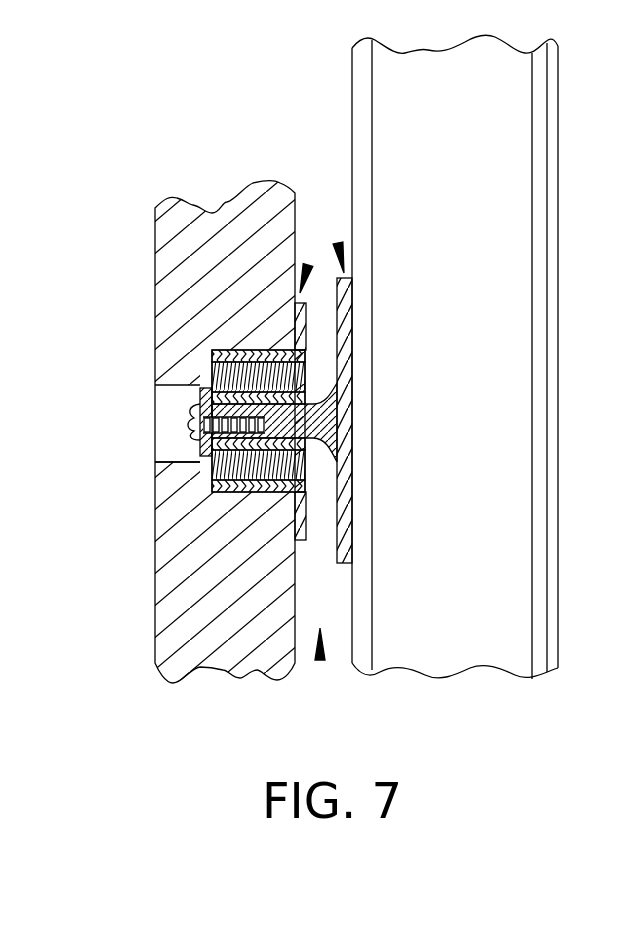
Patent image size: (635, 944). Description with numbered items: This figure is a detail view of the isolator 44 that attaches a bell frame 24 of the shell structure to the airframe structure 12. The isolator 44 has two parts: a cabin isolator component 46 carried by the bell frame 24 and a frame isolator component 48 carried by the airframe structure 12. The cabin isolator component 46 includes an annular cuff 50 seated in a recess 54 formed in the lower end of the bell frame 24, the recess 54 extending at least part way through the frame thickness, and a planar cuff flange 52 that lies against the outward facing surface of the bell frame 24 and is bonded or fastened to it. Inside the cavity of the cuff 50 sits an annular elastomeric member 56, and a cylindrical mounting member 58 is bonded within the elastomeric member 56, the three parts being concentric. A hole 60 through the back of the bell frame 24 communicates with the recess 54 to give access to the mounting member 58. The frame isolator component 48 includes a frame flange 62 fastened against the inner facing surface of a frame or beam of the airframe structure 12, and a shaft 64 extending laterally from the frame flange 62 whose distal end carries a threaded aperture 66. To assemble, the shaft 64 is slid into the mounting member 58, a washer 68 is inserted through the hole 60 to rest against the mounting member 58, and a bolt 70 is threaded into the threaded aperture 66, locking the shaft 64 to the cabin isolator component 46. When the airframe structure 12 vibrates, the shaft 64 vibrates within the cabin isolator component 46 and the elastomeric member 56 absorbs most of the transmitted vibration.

The airframe structure 12 is at (490, 231).
The bell frame 24 is at (224, 668).
The isolator 44 is at (320, 660).
The cabin isolator component 46 is at (308, 265).
The frame isolator component 48 is at (338, 243).
The annular cuff 50 is at (212, 356).
The cuff flange 52 is at (296, 325).
The recess 54 is at (230, 490).
The elastomeric member 56 is at (180, 463).
The mounting member 58 is at (202, 389).
The hole 60 is at (167, 403).
The frame flange 62 is at (340, 520).
The shaft 64 is at (285, 413).
The threaded aperture 66 is at (272, 428).
The washer 68 is at (200, 450).
The bolt 70 is at (197, 436).